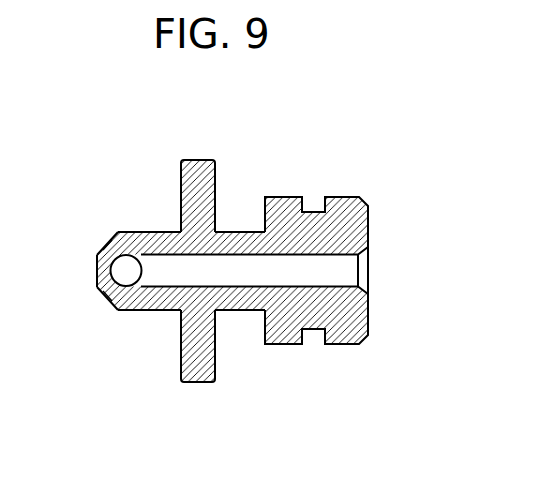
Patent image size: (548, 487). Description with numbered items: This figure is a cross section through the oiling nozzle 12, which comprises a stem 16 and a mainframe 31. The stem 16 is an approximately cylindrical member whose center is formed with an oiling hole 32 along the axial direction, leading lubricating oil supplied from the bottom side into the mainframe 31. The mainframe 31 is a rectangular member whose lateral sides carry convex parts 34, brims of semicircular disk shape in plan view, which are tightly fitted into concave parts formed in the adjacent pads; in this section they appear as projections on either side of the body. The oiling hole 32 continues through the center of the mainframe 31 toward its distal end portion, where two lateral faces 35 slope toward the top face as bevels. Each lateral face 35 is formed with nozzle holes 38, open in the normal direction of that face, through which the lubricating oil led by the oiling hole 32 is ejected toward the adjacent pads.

The oiling nozzle 12 is at (238, 279).
The stem 16 is at (339, 209).
The mainframe 31 is at (232, 250).
The oiling hole 32 is at (343, 271).
The convex part 34 is at (197, 159).
The lateral face 35 is at (112, 236).
The nozzle hole 38 is at (101, 247).